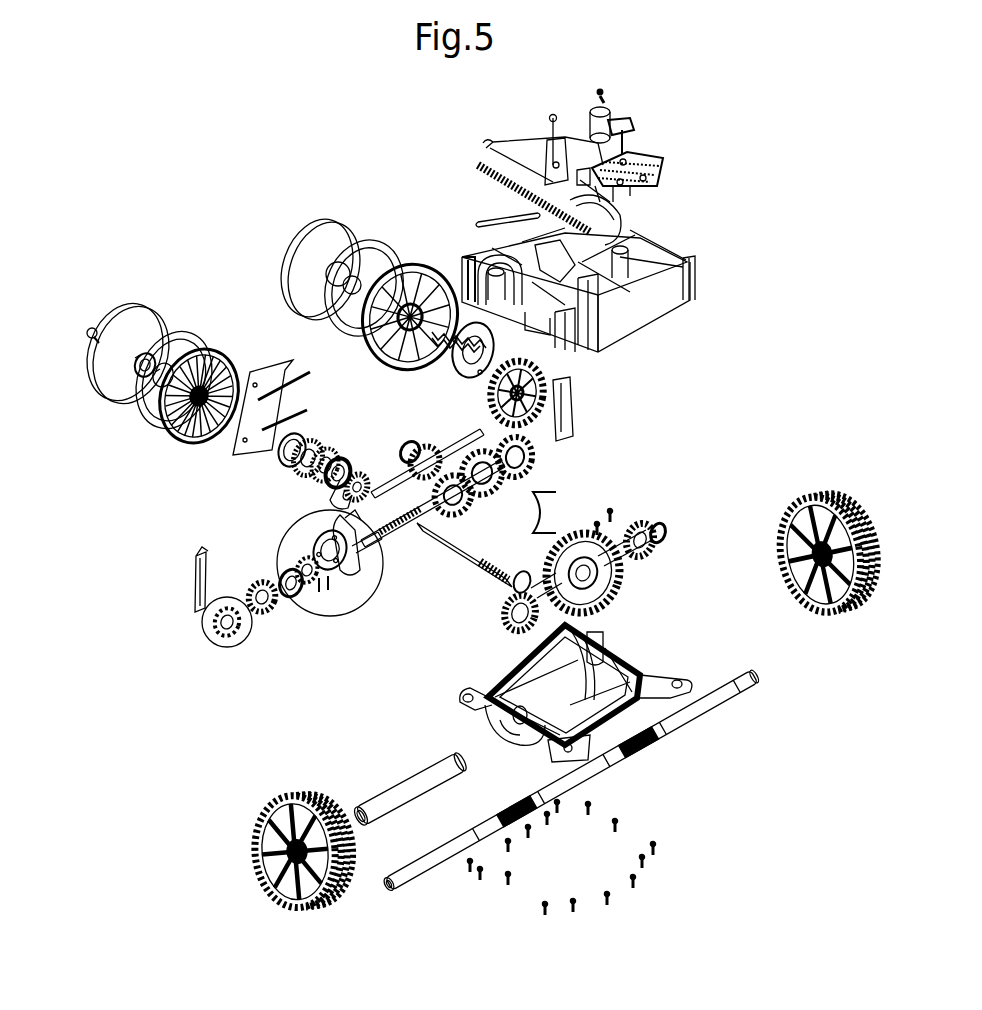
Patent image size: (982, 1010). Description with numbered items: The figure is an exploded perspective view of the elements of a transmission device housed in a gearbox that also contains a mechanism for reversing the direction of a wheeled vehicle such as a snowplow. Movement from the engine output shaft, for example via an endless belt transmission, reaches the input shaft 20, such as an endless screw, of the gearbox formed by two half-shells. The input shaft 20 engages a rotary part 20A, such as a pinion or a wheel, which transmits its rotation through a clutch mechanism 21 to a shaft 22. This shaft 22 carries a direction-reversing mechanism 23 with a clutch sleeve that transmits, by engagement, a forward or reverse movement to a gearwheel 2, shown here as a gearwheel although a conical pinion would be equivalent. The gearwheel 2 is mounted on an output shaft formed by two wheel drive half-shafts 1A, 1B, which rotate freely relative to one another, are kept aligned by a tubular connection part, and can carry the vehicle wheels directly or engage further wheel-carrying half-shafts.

The wheel drive half-shaft 1A is at (507, 627).
The wheel drive half-shaft 1B is at (667, 547).
The gearwheel 2 is at (632, 598).
The input shaft 20 is at (437, 543).
The rotary part 20A is at (275, 618).
The clutch mechanism 21 is at (343, 612).
The shaft 22 is at (393, 537).
The direction-reversing mechanism 23 is at (453, 442).